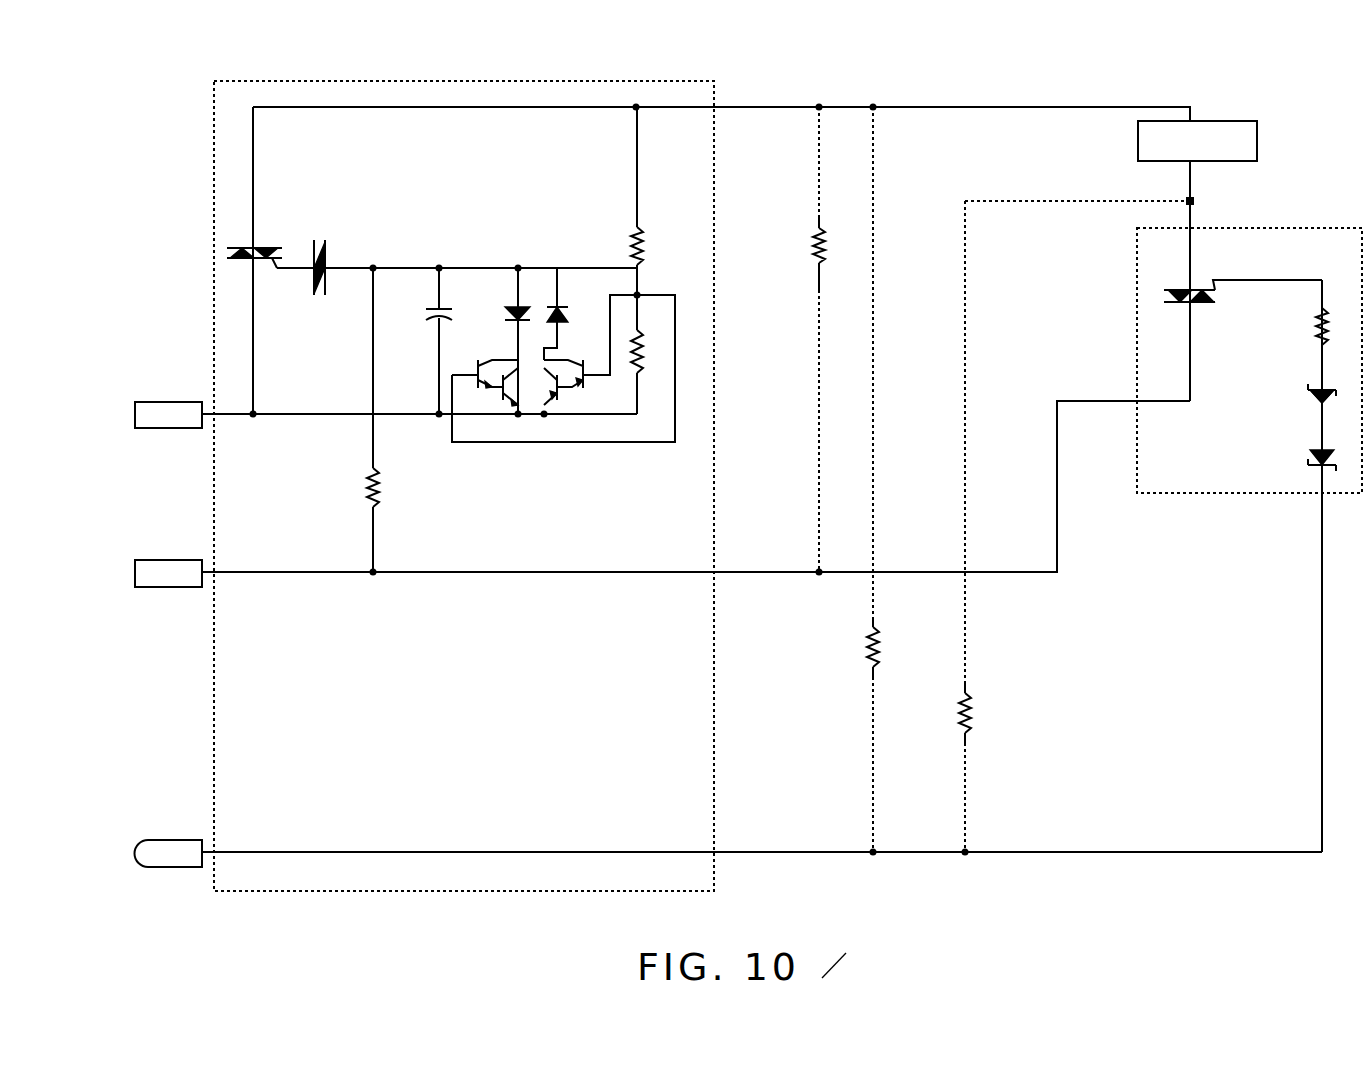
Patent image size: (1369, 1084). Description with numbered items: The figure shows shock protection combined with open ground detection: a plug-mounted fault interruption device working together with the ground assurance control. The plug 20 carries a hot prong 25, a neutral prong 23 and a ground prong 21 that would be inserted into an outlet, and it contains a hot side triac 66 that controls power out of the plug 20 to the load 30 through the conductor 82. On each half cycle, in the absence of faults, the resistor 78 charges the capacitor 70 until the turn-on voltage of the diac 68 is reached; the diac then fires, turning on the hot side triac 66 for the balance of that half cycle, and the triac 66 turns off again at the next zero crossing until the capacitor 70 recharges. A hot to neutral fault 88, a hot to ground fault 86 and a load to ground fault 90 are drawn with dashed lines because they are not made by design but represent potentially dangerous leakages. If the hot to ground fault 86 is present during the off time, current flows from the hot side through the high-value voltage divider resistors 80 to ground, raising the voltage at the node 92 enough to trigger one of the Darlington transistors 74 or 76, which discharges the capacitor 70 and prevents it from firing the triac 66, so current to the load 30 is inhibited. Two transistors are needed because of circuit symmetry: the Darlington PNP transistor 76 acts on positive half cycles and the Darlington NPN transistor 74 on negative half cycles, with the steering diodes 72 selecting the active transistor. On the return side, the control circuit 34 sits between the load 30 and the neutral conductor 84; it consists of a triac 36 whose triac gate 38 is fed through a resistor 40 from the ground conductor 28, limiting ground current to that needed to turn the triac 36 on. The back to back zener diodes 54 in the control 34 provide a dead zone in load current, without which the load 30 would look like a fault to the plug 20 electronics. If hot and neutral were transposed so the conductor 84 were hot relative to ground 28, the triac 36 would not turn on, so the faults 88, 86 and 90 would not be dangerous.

The plug 20 is at (727, 878).
The ground prong 21 is at (175, 826).
The neutral prong 23 is at (175, 547).
The hot prong 25 is at (175, 390).
The ground conductor 28 is at (1072, 862).
The load 30 is at (1268, 133).
The control circuit 34 is at (1296, 214).
The triac 36 is at (1203, 308).
The triac gate 38 is at (1243, 294).
The resistor 40 is at (1337, 322).
The back to back zener diodes 54 is at (1310, 428).
The hot side triac 66 is at (267, 242).
The diac 68 is at (333, 242).
The capacitor 70 is at (428, 317).
The steering diodes 72 is at (530, 292).
The Darlington NPN transistor 74 is at (480, 348).
The Darlington PNP transistor 76 is at (583, 348).
The resistor 78 is at (385, 482).
The voltage divider resistors 80 is at (648, 322).
The conductor 82 is at (990, 95).
The conductor 84 is at (1067, 567).
The hot to ground fault 86 is at (860, 638).
The hot to neutral fault 88 is at (808, 242).
The load to ground fault 90 is at (978, 705).
The node 92 is at (623, 282).